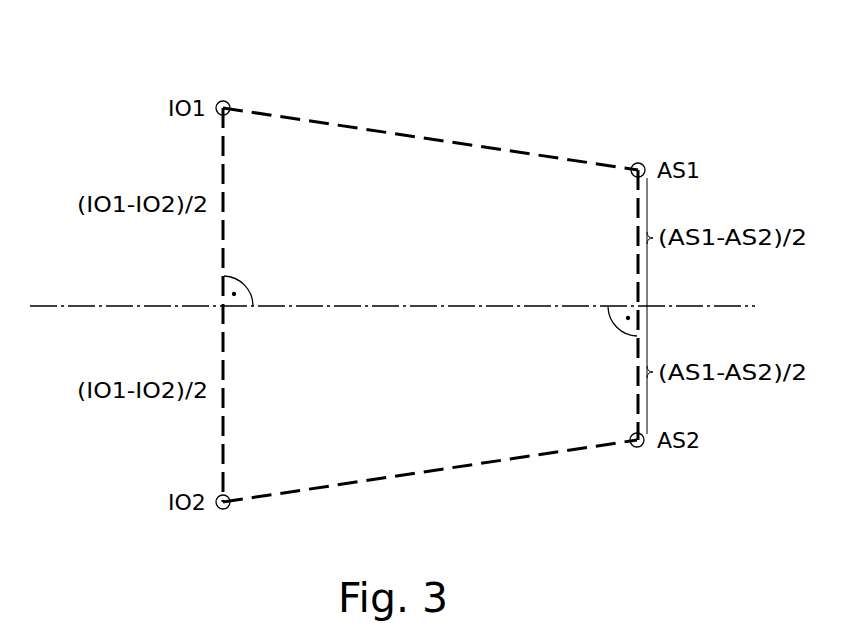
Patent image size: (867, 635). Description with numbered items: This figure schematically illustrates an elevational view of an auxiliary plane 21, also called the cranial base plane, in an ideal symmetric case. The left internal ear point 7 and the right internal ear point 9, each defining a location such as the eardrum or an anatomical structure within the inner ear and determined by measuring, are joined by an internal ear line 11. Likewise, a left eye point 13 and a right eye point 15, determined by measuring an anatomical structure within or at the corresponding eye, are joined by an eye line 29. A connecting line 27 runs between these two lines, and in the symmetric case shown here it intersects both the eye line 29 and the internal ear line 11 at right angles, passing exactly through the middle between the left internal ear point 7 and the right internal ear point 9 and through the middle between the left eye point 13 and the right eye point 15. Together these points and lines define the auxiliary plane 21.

The left internal ear point 7 is at (224, 101).
The right internal ear point 9 is at (221, 509).
The internal ear line 11 is at (224, 243).
The left eye point 13 is at (637, 163).
The right eye point 15 is at (637, 447).
The auxiliary plane 21 is at (442, 161).
The connecting line 27 is at (430, 308).
The eye line 29 is at (636, 240).